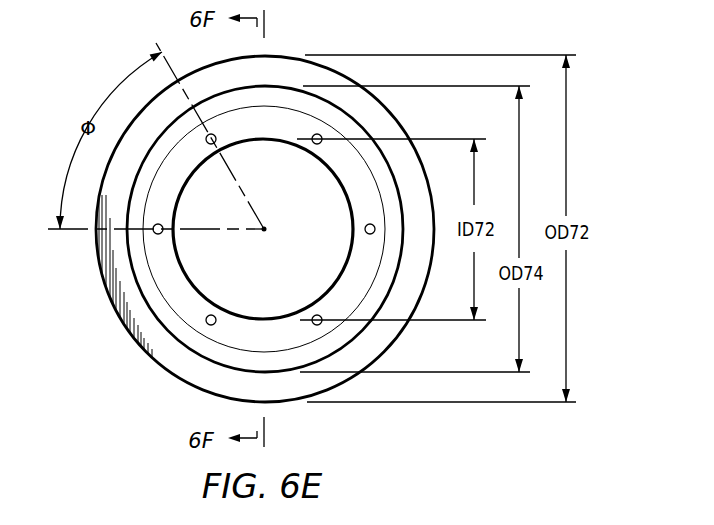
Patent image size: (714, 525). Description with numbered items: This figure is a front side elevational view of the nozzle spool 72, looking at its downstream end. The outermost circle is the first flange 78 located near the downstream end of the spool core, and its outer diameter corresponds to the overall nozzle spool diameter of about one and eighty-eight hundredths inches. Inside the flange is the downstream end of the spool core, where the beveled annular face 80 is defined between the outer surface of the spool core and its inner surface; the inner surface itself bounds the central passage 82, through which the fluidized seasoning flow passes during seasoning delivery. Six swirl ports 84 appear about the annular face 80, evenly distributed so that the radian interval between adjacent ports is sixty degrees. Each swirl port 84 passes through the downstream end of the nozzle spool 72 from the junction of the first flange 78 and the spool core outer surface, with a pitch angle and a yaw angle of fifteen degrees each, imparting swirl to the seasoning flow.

The nozzle spool 72 is at (104, 348).
The first flange 78 is at (167, 369).
The annular face 80 is at (343, 299).
The central passage 82 is at (245, 280).
The swirl ports 84 is at (364, 227).